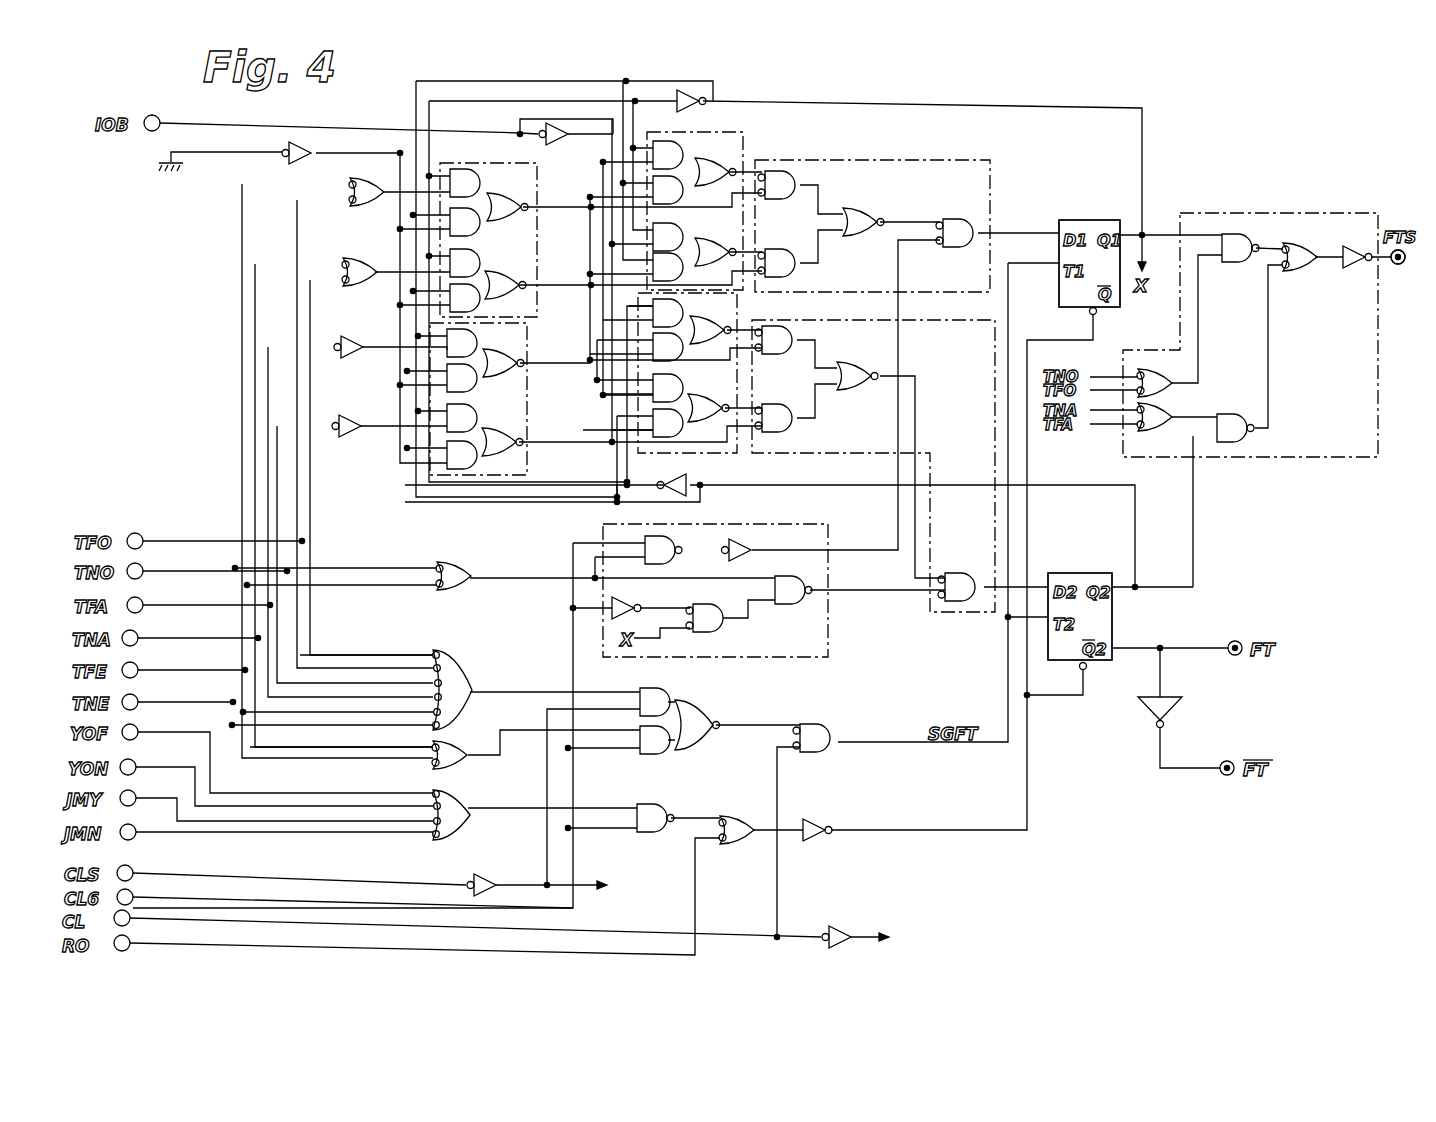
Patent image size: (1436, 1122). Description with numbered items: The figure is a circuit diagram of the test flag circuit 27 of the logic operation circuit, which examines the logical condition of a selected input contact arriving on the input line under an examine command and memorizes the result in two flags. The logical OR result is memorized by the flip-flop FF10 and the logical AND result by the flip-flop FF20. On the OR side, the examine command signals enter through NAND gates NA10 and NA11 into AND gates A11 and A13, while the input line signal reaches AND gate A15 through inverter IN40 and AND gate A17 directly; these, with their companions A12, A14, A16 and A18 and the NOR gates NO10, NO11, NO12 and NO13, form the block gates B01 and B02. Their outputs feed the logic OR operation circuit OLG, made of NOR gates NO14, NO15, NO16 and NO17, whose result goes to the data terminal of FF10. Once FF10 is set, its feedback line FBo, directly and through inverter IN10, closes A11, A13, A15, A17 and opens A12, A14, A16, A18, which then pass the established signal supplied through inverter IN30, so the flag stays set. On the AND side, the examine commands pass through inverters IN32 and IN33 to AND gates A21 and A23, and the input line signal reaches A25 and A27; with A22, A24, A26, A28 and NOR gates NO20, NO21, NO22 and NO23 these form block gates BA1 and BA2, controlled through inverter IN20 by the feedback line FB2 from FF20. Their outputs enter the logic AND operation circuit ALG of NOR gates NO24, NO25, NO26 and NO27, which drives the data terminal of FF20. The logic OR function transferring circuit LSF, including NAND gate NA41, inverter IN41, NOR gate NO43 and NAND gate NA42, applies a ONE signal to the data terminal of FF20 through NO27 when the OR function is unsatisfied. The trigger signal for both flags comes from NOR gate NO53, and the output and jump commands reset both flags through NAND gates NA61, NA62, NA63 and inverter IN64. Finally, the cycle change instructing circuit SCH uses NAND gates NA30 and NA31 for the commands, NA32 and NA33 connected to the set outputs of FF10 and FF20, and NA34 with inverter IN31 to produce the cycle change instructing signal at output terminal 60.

The inverter IN10 is at (690, 89).
The inverter IN20 is at (672, 480).
The inverter IN30 is at (311, 150).
The inverter IN31 is at (1362, 245).
The inverter IN32 is at (360, 344).
The inverter IN33 is at (358, 423).
The inverter IN40 is at (560, 133).
The inverter IN41 is at (745, 549).
The inverter IN64 is at (806, 827).
The NAND gate NA10 is at (384, 175).
The NAND gate NA11 is at (374, 253).
The NAND gate NA30 is at (1168, 368).
The NAND gate NA31 is at (1160, 412).
The NAND gate NA32 is at (1240, 246).
The NAND gate NA33 is at (1237, 420).
The NAND gate NA34 is at (1302, 252).
The NAND gate NA41 is at (668, 548).
The NAND gate NA42 is at (802, 577).
The NAND gate NA61 is at (470, 802).
The NAND gate NA62 is at (665, 814).
The NAND gate NA63 is at (750, 813).
The NOR gate NO10 is at (507, 207).
The NOR gate NO11 is at (505, 285).
The NOR gate NO12 is at (715, 172).
The NOR gate NO13 is at (715, 252).
The NOR gate NO14 is at (780, 185).
The NOR gate NO15 is at (776, 263).
The NOR gate NO16 is at (863, 222).
The NOR gate NO17 is at (954, 233).
The NOR gate NO20 is at (503, 363).
The NOR gate NO21 is at (502, 442).
The NOR gate NO22 is at (710, 330).
The NOR gate NO23 is at (708, 408).
The NOR gate NO24 is at (773, 340).
The NOR gate NO25 is at (773, 418).
The NOR gate NO26 is at (857, 376).
The NOR gate NO27 is at (956, 587).
The NOR gate NO43 is at (710, 612).
The NOR gate NO53 is at (820, 733).
The AND gate A11 is at (465, 183).
The AND gate A12 is at (465, 222).
The AND gate A13 is at (465, 263).
The AND gate A14 is at (465, 298).
The AND gate A15 is at (668, 155).
The AND gate A16 is at (668, 190).
The AND gate A17 is at (669, 237).
The AND gate A18 is at (668, 267).
The AND gate A21 is at (462, 343).
The AND gate A22 is at (462, 378).
The AND gate A23 is at (462, 418).
The AND gate A24 is at (462, 455).
The AND gate A25 is at (668, 313).
The AND gate A26 is at (668, 347).
The AND gate A27 is at (669, 388).
The AND gate A28 is at (668, 423).
The block gate B01 is at (537, 196).
The block gate B02 is at (745, 141).
The block gate BA1 is at (530, 345).
The block gate BA2 is at (745, 312).
The logic OR operation circuit OLG is at (905, 160).
The logic AND operation circuit ALG is at (912, 322).
The logic OR function transferring circuit LSF is at (752, 525).
The cycle change instructing circuit SCH is at (1282, 212).
The flip-flop FF10 is at (1104, 207).
The flip-flop FF20 is at (1096, 560).
The feedback line FBo is at (915, 108).
The feedback line FB2 is at (963, 476).
The test flag circuit 27 is at (820, 99).
The output terminal 60 is at (1399, 265).